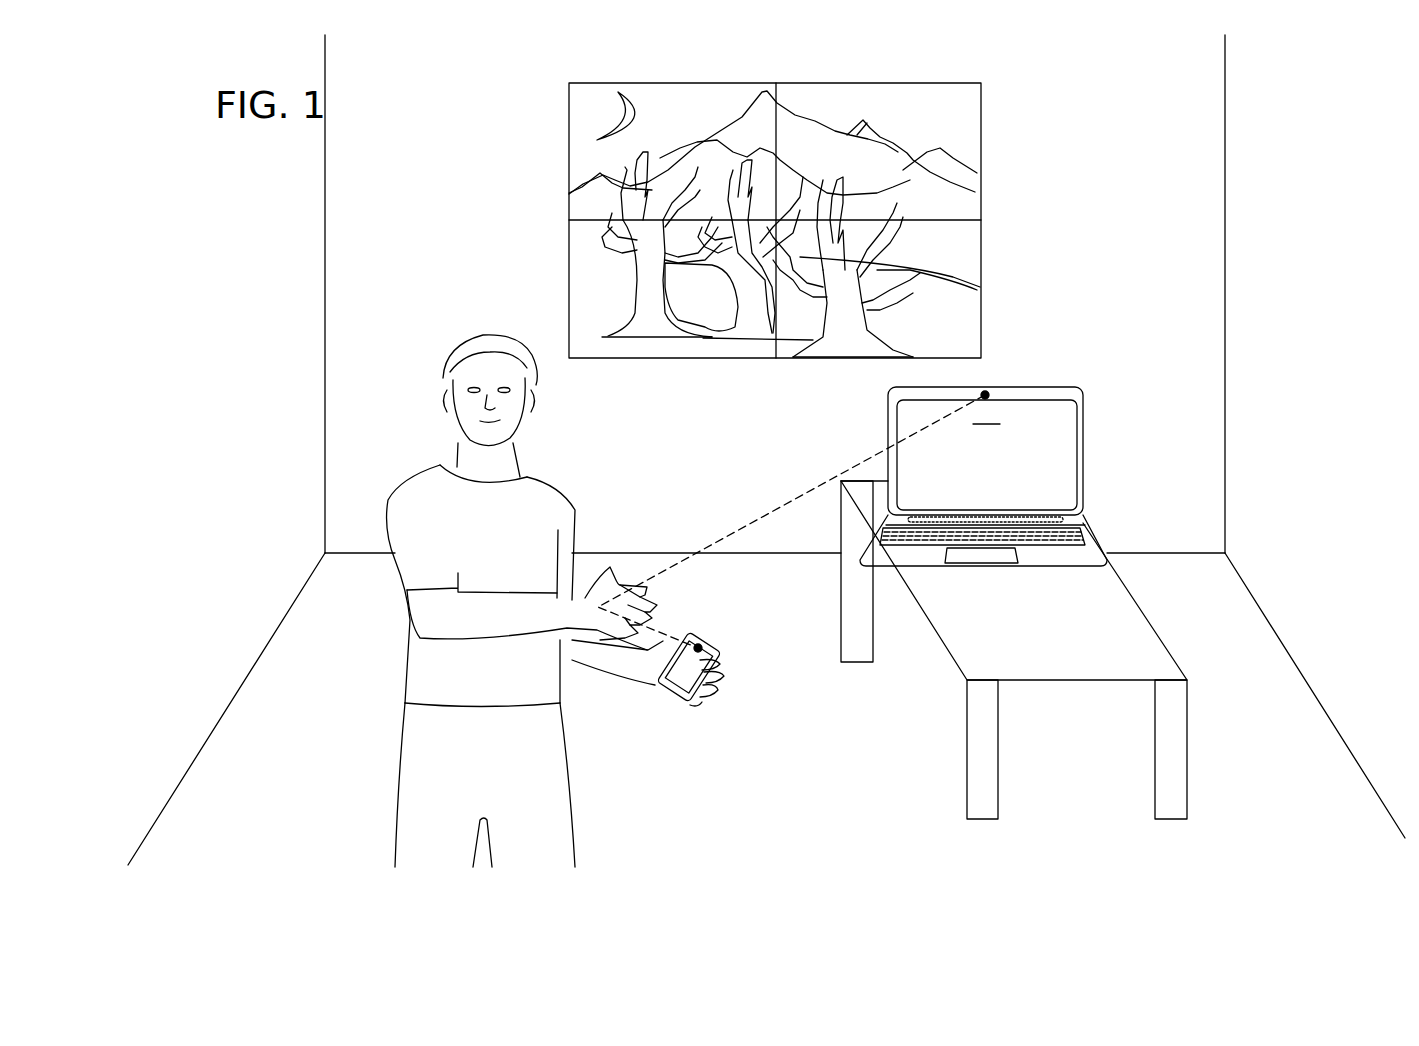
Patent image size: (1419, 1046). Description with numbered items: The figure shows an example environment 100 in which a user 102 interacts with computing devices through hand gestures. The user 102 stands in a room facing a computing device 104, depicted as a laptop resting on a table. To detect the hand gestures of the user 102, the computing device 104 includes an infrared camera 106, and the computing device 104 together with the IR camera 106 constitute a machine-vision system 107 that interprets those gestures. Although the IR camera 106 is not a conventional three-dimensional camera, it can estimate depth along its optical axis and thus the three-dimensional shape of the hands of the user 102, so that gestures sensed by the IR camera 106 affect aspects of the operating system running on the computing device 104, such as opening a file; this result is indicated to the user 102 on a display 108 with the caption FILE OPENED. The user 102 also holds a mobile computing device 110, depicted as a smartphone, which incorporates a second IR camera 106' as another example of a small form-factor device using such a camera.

The environment 100 is at (1071, 120).
The user 102 is at (565, 490).
The computing device 104 is at (998, 452).
The infrared (IR) camera 106 is at (1003, 378).
The second IR camera 106' is at (715, 634).
The machine-vision system 107 is at (1016, 325).
The display 108 is at (985, 432).
The mobile computing device 110 is at (712, 656).